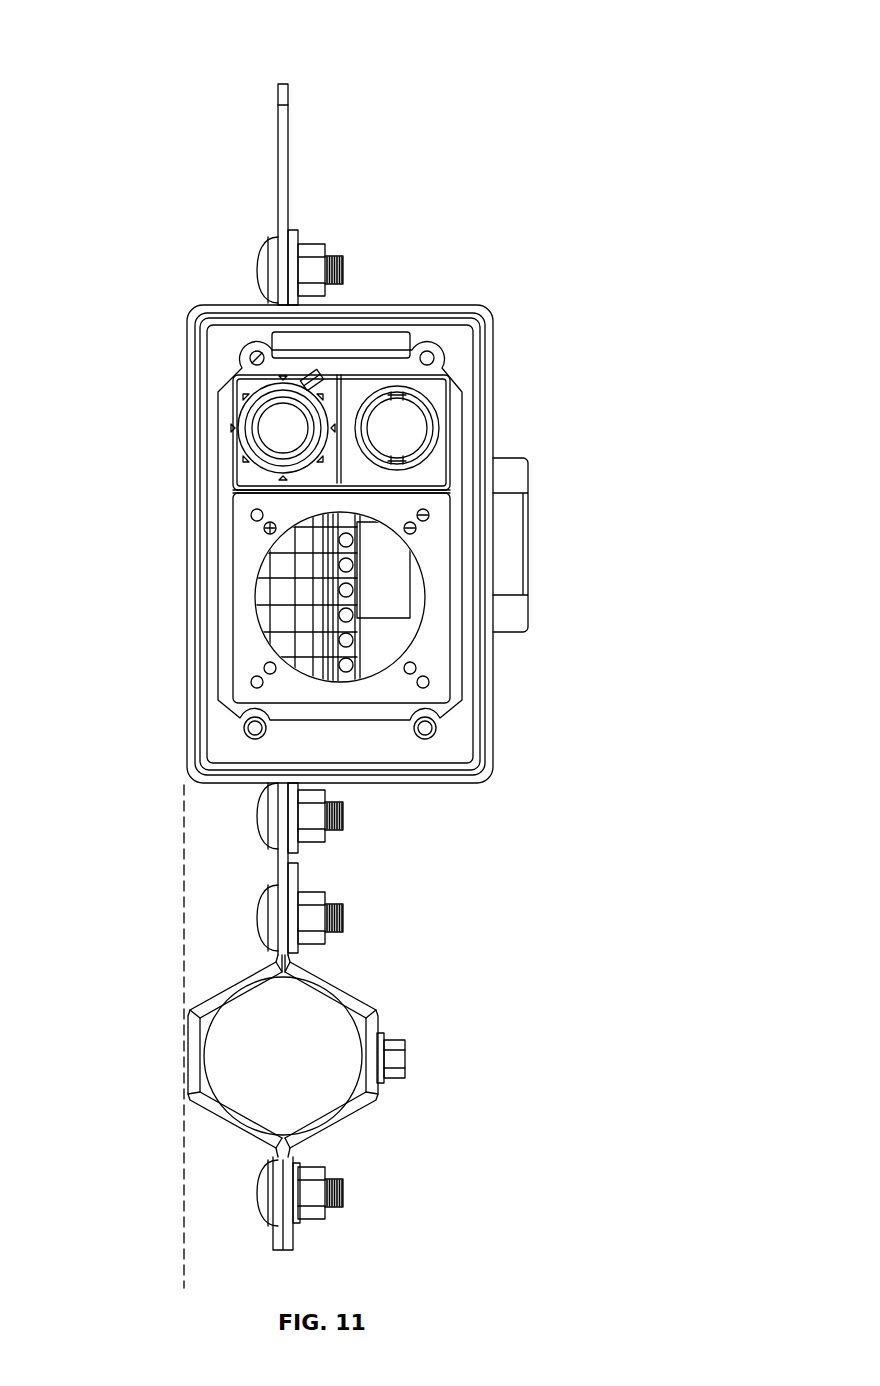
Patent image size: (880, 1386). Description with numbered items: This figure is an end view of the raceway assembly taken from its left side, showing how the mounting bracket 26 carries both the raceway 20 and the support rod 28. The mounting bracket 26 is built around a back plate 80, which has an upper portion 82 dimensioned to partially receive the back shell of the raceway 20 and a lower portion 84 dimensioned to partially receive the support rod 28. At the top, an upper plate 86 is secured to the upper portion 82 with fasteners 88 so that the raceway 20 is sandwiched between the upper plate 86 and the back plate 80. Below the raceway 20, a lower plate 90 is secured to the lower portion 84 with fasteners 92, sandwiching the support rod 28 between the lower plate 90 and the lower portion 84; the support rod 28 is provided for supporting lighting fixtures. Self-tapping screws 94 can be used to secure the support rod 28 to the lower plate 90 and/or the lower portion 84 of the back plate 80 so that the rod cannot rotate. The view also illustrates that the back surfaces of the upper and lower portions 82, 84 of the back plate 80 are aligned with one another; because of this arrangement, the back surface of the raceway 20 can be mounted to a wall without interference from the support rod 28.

The mounting bracket 26 is at (243, 100).
The back plate 80 is at (280, 200).
The raceway 20 is at (228, 570).
The upper portion 82 is at (185, 465).
The fasteners 88 is at (314, 253).
The upper plate 86 is at (295, 240).
The lower portion 84 is at (190, 1010).
The lower plate 90 is at (351, 1115).
The support rod 28 is at (285, 1073).
The self-tapping screws 94 is at (405, 1040).
The fasteners 92 is at (342, 935).